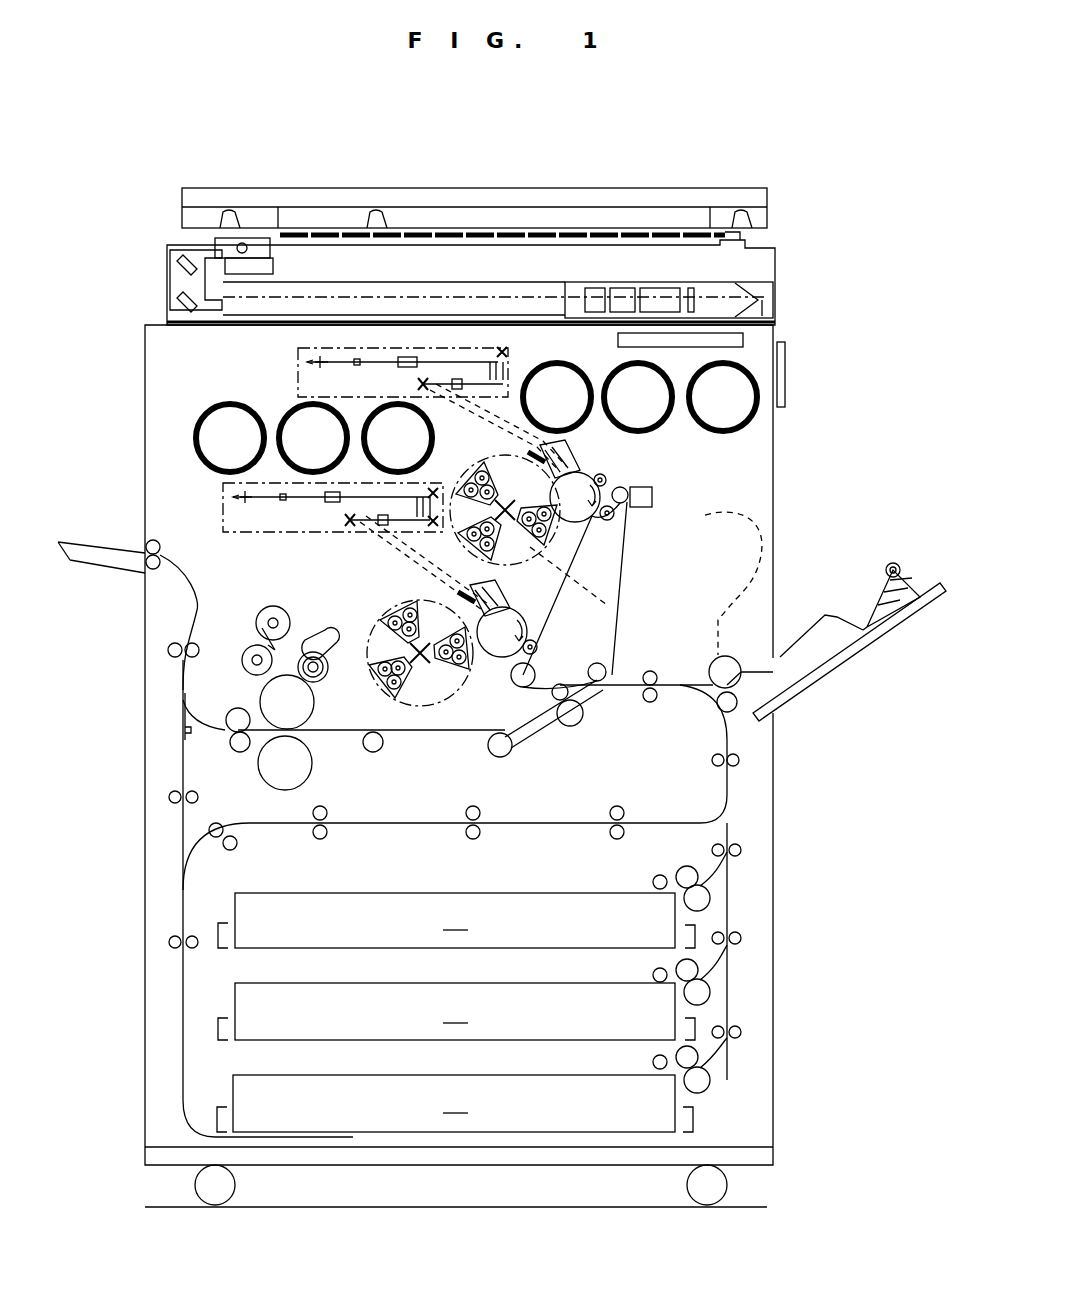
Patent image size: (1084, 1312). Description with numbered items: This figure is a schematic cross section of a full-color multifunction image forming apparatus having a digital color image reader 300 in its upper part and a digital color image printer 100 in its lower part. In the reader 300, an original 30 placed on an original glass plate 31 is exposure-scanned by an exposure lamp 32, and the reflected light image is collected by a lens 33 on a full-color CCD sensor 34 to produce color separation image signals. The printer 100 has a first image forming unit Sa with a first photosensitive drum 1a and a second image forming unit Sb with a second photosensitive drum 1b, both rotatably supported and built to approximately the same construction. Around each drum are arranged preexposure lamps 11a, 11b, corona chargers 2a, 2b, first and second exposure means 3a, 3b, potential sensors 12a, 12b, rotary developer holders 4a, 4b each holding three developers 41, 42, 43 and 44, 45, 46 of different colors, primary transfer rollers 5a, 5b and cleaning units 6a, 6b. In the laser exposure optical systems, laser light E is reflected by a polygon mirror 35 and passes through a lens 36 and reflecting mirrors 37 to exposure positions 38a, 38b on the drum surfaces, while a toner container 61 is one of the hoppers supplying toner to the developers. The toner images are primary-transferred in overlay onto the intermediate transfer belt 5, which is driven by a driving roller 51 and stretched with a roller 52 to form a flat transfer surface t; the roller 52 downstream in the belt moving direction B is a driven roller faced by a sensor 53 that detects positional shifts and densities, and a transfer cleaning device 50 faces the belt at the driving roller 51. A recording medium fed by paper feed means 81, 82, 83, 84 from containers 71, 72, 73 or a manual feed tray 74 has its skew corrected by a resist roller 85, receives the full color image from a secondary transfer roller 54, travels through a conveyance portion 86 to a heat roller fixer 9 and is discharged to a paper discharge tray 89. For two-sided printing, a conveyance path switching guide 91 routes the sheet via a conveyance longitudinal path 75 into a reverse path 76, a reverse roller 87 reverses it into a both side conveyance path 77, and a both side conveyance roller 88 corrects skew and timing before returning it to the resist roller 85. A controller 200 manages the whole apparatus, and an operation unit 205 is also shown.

The digital color image reader 300 is at (797, 230).
The original 30 is at (650, 228).
The original glass plate 31 is at (710, 234).
The lens 33 is at (607, 282).
The exposure lamp 32 is at (214, 245).
The full-color CCD sensor 34 is at (720, 297).
The toner container 61 is at (385, 432).
The controller 200 is at (743, 342).
The operation unit 205 is at (785, 352).
The preexposure lamp 11b is at (603, 405).
The preexposure lamp 11a is at (420, 598).
The second exposure means 3b is at (562, 345).
The first exposure means 3a is at (223, 521).
The polygon mirror 35 is at (300, 351).
The lens 36 is at (408, 357).
The reflecting mirror 37 is at (510, 365).
The laser light E is at (486, 340).
The second image forming unit Sb is at (267, 545).
The first image forming unit Sa is at (374, 673).
The rotary developer holder 4b is at (610, 607).
The rotary developer holder 4a is at (372, 758).
The potential sensor 12b is at (545, 455).
The potential sensor 12a is at (405, 598).
The developer 45 is at (470, 467).
The corona charger 2b is at (573, 459).
The corona charger 2a is at (430, 602).
The second photosensitive drum 1b is at (600, 511).
The first photosensitive drum 1a is at (490, 658).
The cleaning unit 6b is at (607, 508).
The cleaning unit 6a is at (537, 647).
The exposure position 38b is at (604, 481).
The exposure position 38a is at (535, 672).
The driven roller 52 is at (655, 498).
The sensor 53 is at (628, 501).
The primary transfer roller 5b is at (640, 507).
The primary transfer roller 5a is at (606, 671).
The intermediate transfer belt 5 is at (621, 592).
The developer 44 is at (627, 562).
The moving direction B is at (590, 562).
The transfer surface t is at (566, 555).
The developer 46 is at (548, 591).
The developer 41 is at (445, 700).
The developer 43 is at (390, 696).
The developer 42 is at (322, 641).
The heat roller fixer 9 is at (262, 702).
The paper discharge tray 89 is at (90, 543).
The conveyance path switching guide 91 is at (185, 732).
The conveyance portion 86 is at (425, 773).
The transfer cleaning device 50 is at (505, 758).
The driving roller 51 is at (545, 725).
The secondary transfer roller 54 is at (580, 724).
The resist roller 85 is at (652, 703).
The manual feed tray 74 is at (850, 652).
The paper feed means 84 is at (810, 692).
The digital color image printer 100 is at (798, 775).
The both side conveyance path 77 is at (380, 825).
The both side conveyance roller 88 is at (620, 840).
The conveyance longitudinal path 75 is at (183, 837).
The reverse roller 87 is at (170, 944).
The reverse path 76 is at (183, 1052).
The container 71 is at (456, 920).
The container 72 is at (456, 1011).
The container 73 is at (455, 1103).
The paper feed means 81 is at (700, 898).
The paper feed means 82 is at (700, 993).
The paper feed means 83 is at (700, 1080).